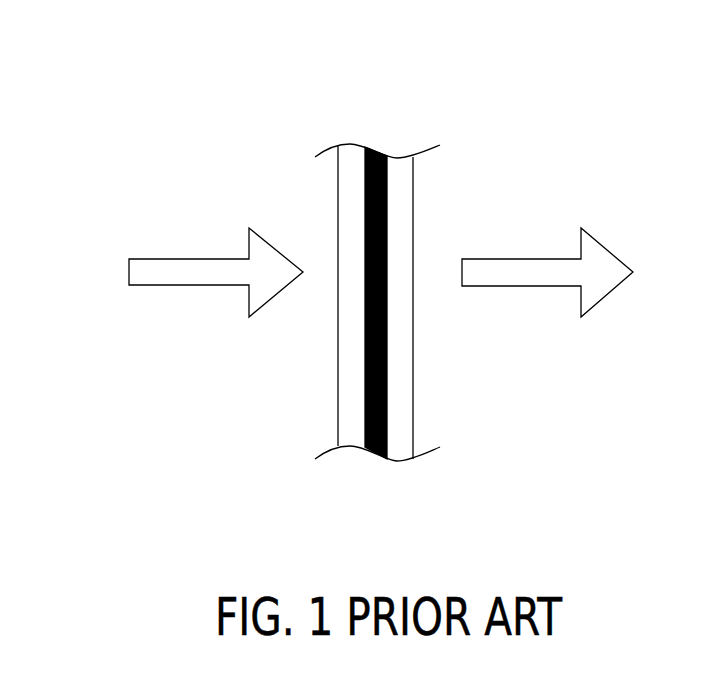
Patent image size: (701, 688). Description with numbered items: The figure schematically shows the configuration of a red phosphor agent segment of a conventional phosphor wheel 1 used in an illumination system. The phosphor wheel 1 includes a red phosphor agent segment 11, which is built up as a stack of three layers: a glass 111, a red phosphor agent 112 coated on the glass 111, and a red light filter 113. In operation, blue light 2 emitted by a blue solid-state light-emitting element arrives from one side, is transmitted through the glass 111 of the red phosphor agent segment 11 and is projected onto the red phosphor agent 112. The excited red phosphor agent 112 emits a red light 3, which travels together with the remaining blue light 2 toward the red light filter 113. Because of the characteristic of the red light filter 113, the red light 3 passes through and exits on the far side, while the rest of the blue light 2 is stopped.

The phosphor wheel 1 is at (478, 244).
The blue light 2 is at (197, 275).
The red light 3 is at (607, 267).
The red phosphor agent segment 11 is at (434, 302).
The glass 111 is at (350, 368).
The red phosphor agent 112 is at (387, 392).
The red light filter 113 is at (398, 424).